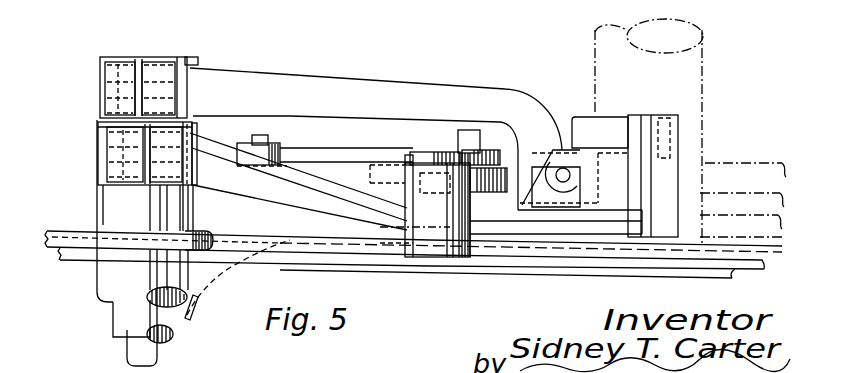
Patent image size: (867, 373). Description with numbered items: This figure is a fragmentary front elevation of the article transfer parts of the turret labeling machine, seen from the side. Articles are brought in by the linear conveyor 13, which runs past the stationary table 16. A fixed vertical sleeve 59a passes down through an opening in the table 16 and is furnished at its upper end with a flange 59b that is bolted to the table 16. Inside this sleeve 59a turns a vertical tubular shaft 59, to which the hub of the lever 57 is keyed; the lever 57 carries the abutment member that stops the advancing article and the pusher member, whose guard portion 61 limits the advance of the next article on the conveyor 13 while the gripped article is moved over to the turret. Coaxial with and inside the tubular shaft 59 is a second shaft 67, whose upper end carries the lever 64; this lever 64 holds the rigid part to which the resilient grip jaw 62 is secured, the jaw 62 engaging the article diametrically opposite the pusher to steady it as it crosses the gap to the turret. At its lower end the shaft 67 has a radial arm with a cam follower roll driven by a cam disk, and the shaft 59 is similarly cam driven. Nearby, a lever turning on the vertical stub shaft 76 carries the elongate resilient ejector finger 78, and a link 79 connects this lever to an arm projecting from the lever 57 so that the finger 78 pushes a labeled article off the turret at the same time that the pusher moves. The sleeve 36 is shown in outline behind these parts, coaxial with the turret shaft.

The linear conveyor 13 is at (380, 240).
The stationary table 16 is at (270, 261).
The sleeve 36 is at (663, 87).
The lever 57 is at (277, 190).
The tubular shaft 59 is at (123, 317).
The fixed vertical sleeve 59a is at (100, 286).
The flange 59b is at (92, 240).
The guard portion 61 is at (663, 173).
The grip jaw 62 is at (600, 125).
The lever 64 is at (267, 78).
The shaft 67 is at (127, 343).
The vertical stub shaft 76 is at (423, 155).
The ejector finger 78 is at (466, 130).
The link 79 is at (380, 150).